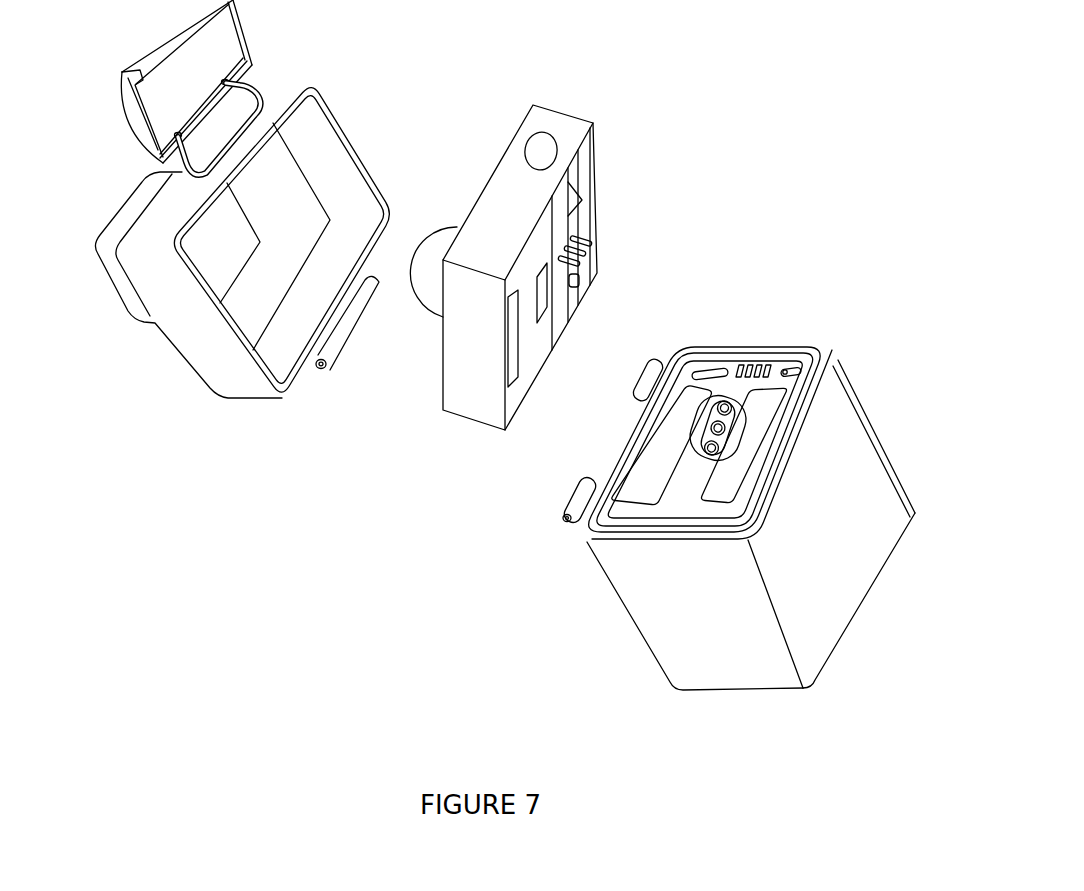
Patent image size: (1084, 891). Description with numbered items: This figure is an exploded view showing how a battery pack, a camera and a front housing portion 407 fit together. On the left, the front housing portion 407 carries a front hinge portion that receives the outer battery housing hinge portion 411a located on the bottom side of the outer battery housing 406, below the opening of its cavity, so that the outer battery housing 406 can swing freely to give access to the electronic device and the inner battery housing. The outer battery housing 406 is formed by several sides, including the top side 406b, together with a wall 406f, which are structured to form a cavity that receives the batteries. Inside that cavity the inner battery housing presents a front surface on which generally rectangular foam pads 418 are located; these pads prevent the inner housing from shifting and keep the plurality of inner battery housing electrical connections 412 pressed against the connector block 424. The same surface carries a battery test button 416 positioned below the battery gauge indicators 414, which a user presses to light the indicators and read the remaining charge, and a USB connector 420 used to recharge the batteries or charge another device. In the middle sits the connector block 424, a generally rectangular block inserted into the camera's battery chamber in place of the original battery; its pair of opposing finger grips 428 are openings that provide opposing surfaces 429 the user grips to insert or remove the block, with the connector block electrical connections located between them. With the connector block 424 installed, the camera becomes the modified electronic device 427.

The front housing portion 407 is at (212, 353).
The modified electronic device 427 is at (544, 267).
The connector block 424 is at (587, 158).
The opposing surfaces 429 is at (570, 208).
The finger grips 428 is at (572, 278).
The outer battery housing 406 is at (692, 484).
The top side 406b is at (867, 531).
The housing front wall 406f is at (735, 627).
The outer battery housing hinge portion 411a is at (573, 524).
The foam pads 418 is at (773, 405).
The inner battery housing electrical connections 412 is at (703, 467).
The battery test button 416 is at (703, 371).
The battery gauge indicators 414 is at (758, 368).
The USB connector 420 is at (797, 371).